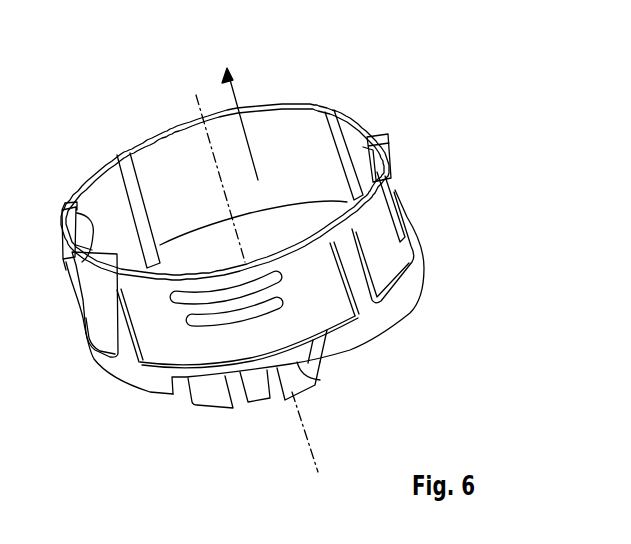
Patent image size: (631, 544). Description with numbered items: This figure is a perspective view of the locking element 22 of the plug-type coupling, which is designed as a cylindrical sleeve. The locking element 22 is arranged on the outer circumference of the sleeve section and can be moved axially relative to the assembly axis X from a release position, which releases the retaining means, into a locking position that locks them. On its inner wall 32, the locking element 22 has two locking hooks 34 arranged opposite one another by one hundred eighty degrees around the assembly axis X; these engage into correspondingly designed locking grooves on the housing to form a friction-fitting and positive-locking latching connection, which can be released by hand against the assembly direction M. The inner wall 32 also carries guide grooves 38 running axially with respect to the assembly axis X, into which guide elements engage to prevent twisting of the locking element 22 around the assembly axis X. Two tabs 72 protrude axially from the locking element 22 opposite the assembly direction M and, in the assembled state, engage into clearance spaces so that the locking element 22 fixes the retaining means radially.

The locking element 22 is at (326, 261).
The inner wall 32 is at (288, 147).
The locking hook 34 is at (72, 208).
The guide grooves 38 is at (110, 163).
The tab 72 is at (305, 362).
The assembly axis X is at (253, 290).
The assembly direction M is at (236, 109).